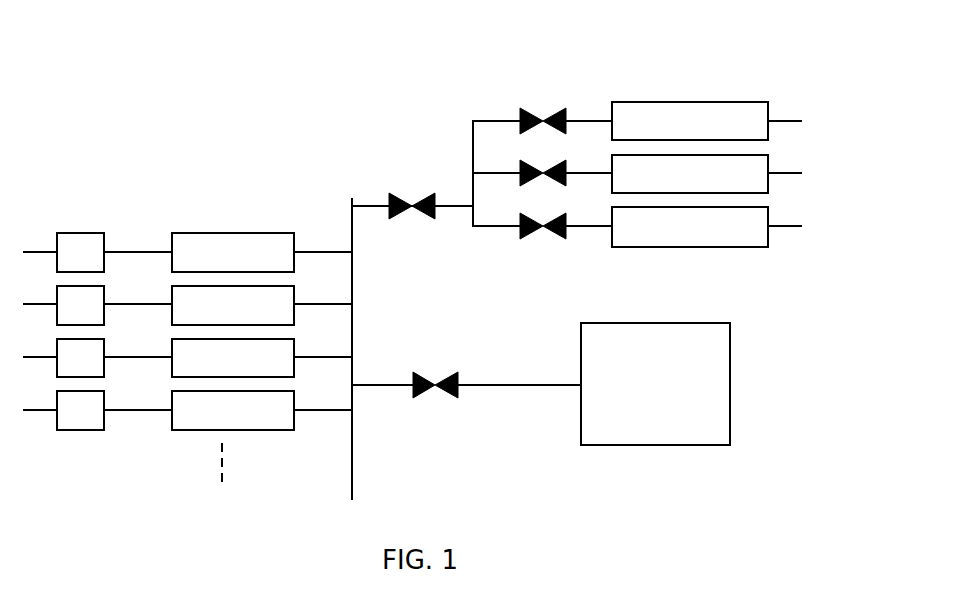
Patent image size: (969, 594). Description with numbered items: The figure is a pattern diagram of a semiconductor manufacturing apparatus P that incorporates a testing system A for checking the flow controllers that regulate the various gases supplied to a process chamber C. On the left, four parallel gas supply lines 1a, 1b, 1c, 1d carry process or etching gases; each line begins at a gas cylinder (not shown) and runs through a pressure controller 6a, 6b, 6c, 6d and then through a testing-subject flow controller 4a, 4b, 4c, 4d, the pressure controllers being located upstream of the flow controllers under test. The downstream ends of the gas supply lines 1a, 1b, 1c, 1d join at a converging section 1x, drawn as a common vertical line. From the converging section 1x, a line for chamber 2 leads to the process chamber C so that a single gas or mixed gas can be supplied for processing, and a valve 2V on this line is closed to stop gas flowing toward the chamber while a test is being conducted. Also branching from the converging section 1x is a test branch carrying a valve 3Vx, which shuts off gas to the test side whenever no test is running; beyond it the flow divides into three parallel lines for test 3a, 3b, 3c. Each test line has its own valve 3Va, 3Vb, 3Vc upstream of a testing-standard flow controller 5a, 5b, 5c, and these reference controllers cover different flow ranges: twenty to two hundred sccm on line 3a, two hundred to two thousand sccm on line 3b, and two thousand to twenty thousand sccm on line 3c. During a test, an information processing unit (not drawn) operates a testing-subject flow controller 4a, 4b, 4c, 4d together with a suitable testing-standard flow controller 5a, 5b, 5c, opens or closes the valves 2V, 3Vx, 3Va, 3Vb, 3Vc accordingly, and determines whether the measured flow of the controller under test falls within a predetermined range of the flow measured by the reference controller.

The gas supply line 1a is at (335, 252).
The gas supply line 1b is at (335, 304).
The gas supply line 1c is at (335, 357).
The gas supply line 1d is at (335, 410).
The converging section 1x is at (352, 206).
The line for chamber 2 is at (520, 385).
The valve 2V is at (449, 372).
The line for test 3a is at (510, 121).
The line for test 3b is at (510, 173).
The line for test 3c is at (510, 226).
The valve 3Vx is at (428, 193).
The valve 3Va is at (553, 110).
The valve 3Vb is at (553, 162).
The valve 3Vc is at (553, 215).
The testing-subject flow controller 4a is at (172, 243).
The testing-subject flow controller 4b is at (172, 296).
The testing-subject flow controller 4c is at (172, 349).
The testing-subject flow controller 4d is at (172, 402).
The testing-standard flow controller 5a is at (612, 108).
The testing-standard flow controller 5b is at (612, 160).
The testing-standard flow controller 5c is at (612, 212).
The pressure controller 6a is at (57, 243).
The pressure controller 6b is at (57, 296).
The pressure controller 6c is at (57, 349).
The pressure controller 6d is at (57, 402).
The process chamber C is at (625, 323).
The testing system A is at (226, 90).
The semiconductor manufacturing apparatus P is at (357, 45).